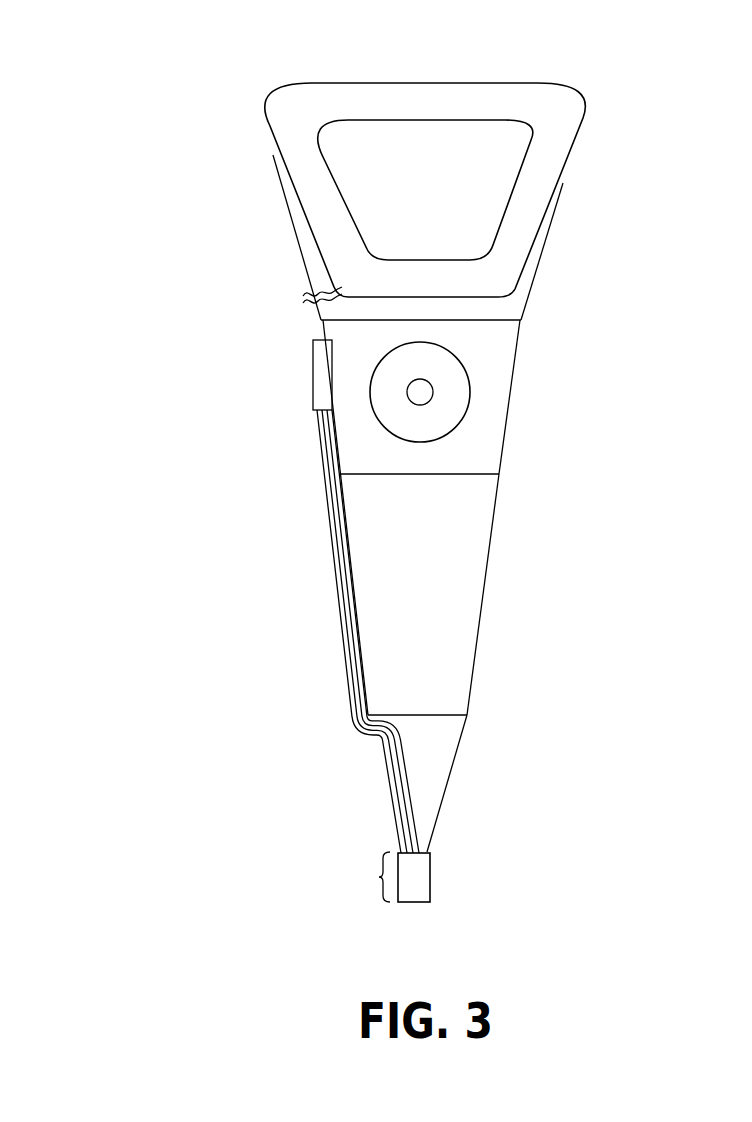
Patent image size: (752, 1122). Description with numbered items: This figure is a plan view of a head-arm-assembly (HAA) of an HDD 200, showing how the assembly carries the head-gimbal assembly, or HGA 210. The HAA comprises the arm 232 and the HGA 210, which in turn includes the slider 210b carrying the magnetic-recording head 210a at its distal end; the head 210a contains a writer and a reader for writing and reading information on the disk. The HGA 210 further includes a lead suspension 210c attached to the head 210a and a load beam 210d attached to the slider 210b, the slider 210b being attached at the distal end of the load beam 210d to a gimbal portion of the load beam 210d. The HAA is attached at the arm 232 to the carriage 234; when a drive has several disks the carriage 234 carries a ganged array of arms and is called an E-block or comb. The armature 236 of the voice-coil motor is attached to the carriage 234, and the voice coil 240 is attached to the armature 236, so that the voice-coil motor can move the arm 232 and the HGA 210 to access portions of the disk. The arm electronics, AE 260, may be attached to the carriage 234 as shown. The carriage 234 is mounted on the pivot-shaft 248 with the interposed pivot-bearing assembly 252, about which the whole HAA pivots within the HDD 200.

The HDD 200 is at (92, 68).
The voice coil 240 is at (322, 212).
The armature 236 is at (323, 273).
The AE 260 is at (318, 383).
The pivot-shaft 248 is at (418, 388).
The pivot-bearing assembly 252 is at (450, 400).
The carriage 234 is at (475, 442).
The arm 232 is at (413, 555).
The HGA 210 is at (223, 673).
The magnetic-recording head 210a is at (403, 892).
The slider 210b is at (382, 875).
The lead suspension 210c is at (393, 788).
The load beam 210d is at (415, 752).